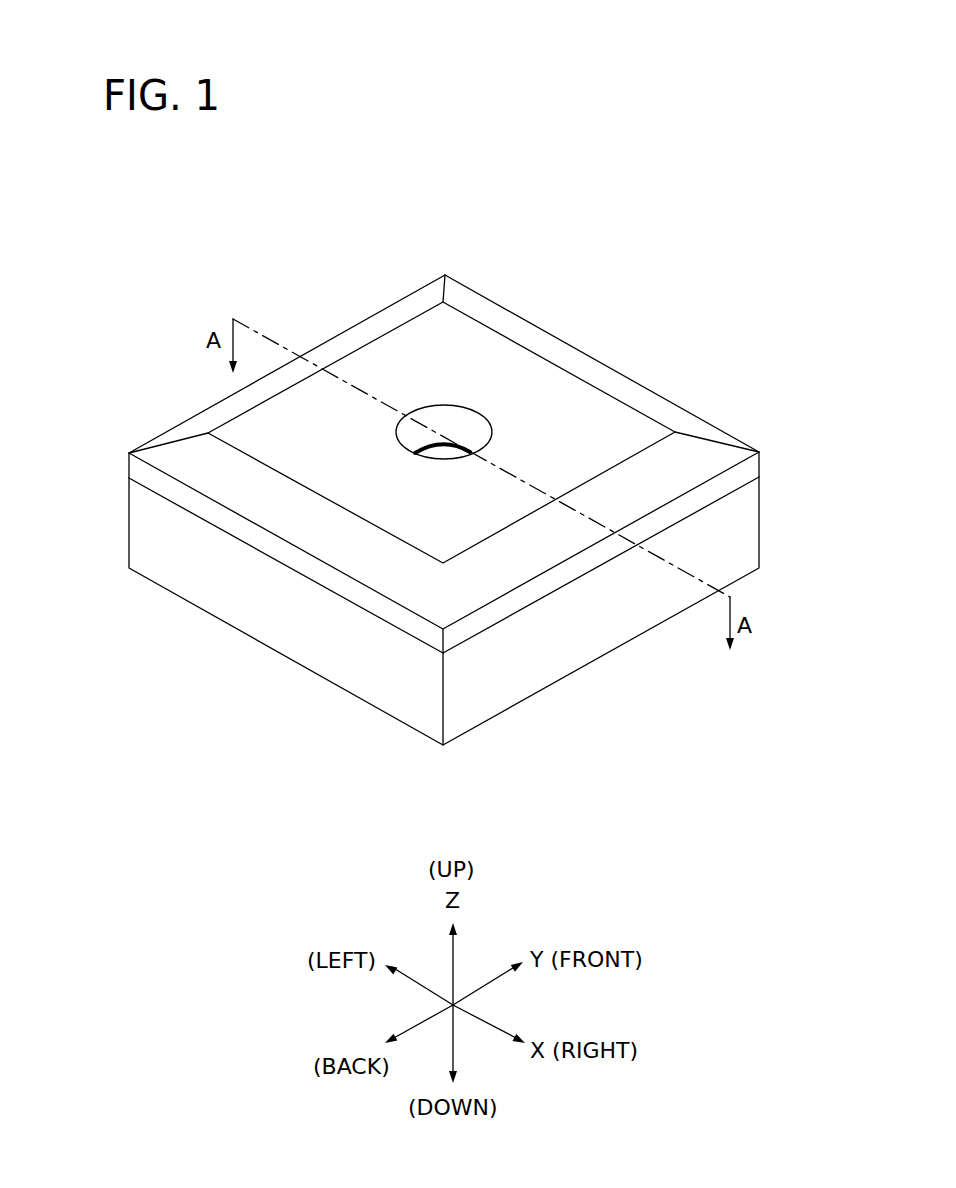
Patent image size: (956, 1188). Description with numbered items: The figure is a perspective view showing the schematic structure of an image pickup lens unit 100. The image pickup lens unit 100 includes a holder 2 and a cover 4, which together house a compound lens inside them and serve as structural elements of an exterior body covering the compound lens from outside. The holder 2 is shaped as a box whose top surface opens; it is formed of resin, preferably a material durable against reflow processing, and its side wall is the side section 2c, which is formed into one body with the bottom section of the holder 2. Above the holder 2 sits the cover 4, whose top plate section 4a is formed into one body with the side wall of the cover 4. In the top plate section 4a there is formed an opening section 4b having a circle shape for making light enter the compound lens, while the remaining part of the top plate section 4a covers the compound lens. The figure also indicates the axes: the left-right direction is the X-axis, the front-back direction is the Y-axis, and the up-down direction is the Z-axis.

The image pickup lens unit 100 is at (478, 178).
The holder 2 is at (528, 688).
The side section 2c is at (593, 640).
The cover 4 is at (610, 415).
The top plate section 4a is at (553, 388).
The opening section 4b is at (480, 429).